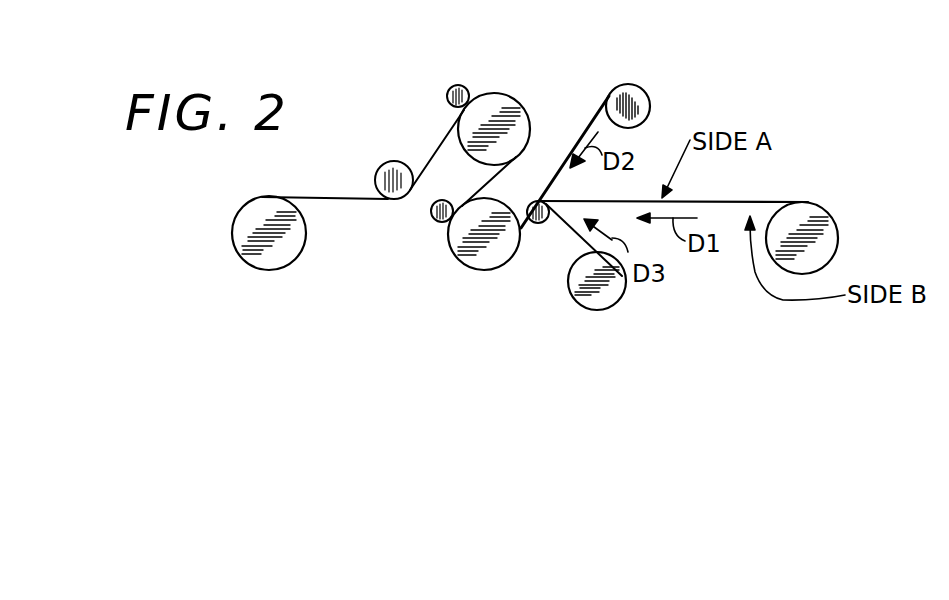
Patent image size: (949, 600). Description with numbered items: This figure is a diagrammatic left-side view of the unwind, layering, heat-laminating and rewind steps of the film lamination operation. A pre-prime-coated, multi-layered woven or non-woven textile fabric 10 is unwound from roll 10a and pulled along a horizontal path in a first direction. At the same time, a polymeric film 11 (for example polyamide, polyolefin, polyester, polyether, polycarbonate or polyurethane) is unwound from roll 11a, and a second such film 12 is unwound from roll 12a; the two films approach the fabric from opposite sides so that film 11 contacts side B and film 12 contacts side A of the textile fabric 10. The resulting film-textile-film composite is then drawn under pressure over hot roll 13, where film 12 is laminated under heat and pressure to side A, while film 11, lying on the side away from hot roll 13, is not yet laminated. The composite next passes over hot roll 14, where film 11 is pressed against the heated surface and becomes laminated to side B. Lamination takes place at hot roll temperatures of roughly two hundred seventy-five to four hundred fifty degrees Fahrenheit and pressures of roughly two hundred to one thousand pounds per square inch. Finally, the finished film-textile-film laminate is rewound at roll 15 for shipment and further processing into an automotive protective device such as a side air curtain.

The textile fabric 10 is at (712, 202).
The roll of textile fabric 10a is at (805, 213).
The film 11 is at (578, 232).
The film roll 11a is at (598, 302).
The film 12 is at (578, 140).
The film roll 12a is at (641, 100).
The hot roll 13 is at (453, 236).
The hot roll 14 is at (488, 105).
The rewind roll 15 is at (252, 248).